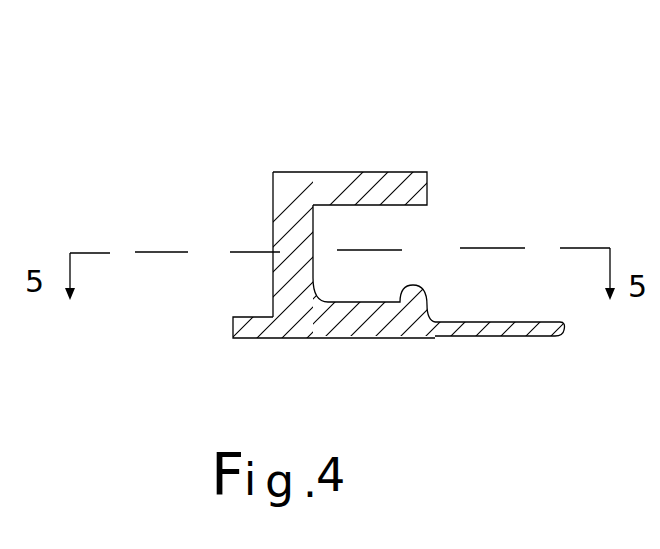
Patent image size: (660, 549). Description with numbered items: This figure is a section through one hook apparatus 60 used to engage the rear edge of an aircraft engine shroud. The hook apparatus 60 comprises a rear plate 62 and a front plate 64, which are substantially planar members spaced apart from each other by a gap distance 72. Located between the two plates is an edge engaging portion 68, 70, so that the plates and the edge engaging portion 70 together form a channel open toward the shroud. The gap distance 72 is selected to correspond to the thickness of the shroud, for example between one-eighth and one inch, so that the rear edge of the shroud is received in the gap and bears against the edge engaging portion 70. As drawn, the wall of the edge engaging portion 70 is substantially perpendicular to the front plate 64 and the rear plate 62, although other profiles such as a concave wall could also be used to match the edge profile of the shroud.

The hook apparatus 60 is at (402, 216).
The front plate 64 is at (393, 172).
The edge engaging portion 70 is at (305, 333).
The rear plate 62 is at (418, 336).
The edge engaging portion 68 is at (546, 334).
The gap distance 72 is at (432, 226).